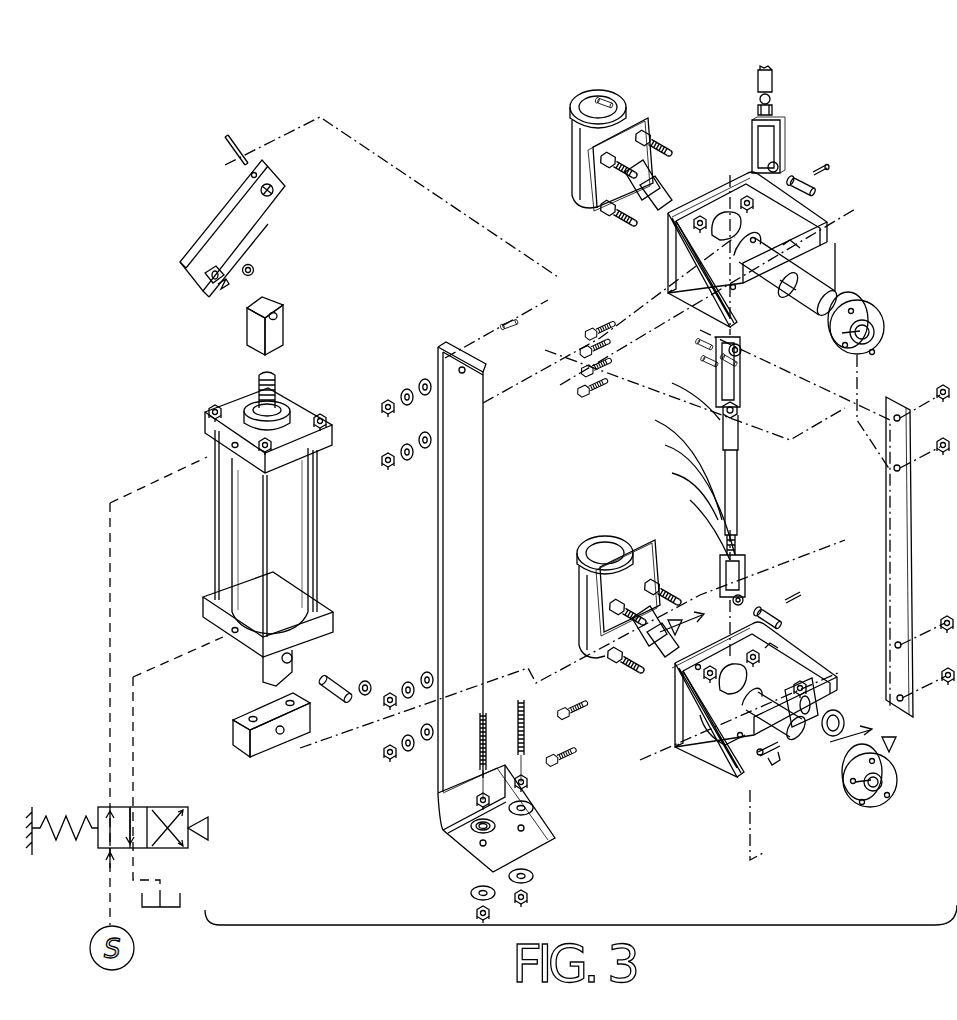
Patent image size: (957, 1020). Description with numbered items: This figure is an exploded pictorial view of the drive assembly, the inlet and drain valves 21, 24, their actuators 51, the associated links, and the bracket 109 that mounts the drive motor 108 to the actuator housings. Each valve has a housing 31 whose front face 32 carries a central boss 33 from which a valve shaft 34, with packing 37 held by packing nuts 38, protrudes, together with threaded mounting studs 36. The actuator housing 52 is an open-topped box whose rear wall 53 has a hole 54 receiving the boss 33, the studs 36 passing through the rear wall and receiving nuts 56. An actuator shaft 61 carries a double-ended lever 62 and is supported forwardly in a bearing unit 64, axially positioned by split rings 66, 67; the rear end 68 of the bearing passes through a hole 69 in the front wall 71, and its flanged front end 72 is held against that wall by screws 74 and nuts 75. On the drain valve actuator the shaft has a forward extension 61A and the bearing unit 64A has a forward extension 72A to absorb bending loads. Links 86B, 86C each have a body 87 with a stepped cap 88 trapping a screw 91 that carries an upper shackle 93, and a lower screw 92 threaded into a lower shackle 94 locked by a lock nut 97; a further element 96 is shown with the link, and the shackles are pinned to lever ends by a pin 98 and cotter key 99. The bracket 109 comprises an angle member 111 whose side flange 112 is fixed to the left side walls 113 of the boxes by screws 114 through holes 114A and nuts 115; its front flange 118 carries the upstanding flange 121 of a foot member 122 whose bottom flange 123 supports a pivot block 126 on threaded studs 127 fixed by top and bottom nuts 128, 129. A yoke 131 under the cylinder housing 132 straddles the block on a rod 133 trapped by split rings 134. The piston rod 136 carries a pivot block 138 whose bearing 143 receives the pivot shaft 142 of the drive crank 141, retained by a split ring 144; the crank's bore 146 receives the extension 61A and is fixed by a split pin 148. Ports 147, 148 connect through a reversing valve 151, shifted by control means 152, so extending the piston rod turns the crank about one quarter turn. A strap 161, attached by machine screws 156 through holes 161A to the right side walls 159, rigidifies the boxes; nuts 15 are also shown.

The nuts 15 is at (943, 383).
The inlet valve 21 is at (605, 600).
The drain valve 24 is at (552, 158).
The valve housing 31 is at (580, 610).
The front face 32 is at (640, 567).
The central boss 33 is at (605, 612).
The valve shaft 34 is at (660, 612).
The threaded mounting studs 36 is at (672, 575).
The packing 37 is at (597, 655).
The packing nuts 38 is at (640, 660).
The actuator 51 is at (648, 256).
The housing 52 is at (668, 262).
The rear wall 53 is at (722, 575).
The hole 54 is at (720, 715).
The nuts 56 is at (782, 626).
The actuator shaft 61 is at (788, 240).
The forward extension 61A is at (812, 278).
The lever 62 is at (725, 290).
The bearing unit 64 is at (850, 828).
The bearing unit 64A is at (888, 302).
The split ring 66 is at (780, 690).
The split ring 67 is at (822, 700).
The rear end 68 is at (858, 735).
The hole 69 is at (817, 694).
The front wall 71 is at (840, 262).
The front end 72 is at (885, 758).
The forward extension 72A is at (878, 318).
The screws 74 is at (876, 840).
The nuts 75 is at (766, 768).
The middle link 86B is at (785, 99).
The bottom link 86C is at (748, 510).
The body 87 is at (740, 475).
The stepped cap 88 is at (740, 440).
The screw 91 is at (718, 409).
The screw 92 is at (684, 491).
The shackle 93 is at (716, 378).
The shackle 94 is at (697, 523).
The wire 96 is at (680, 445).
The lock nut 97 is at (671, 462).
The pin 98 is at (765, 600).
The cotter key 99 is at (800, 594).
The drive motor 108 is at (279, 524).
The bracket 109 is at (499, 591).
The angle member 111 is at (482, 514).
The side flange 112 is at (445, 345).
The left side wall 113 is at (675, 290).
The screws 114 is at (790, 350).
The machine screw holes 114A is at (448, 362).
The nuts 115 is at (385, 400).
The front flange 118 is at (466, 549).
The upstanding flange 121 is at (455, 822).
The foot member 122 is at (499, 831).
The bottom flange 123 is at (548, 838).
The pivot block 126 is at (240, 712).
The threaded studs 127 is at (527, 745).
The top nuts 128 is at (530, 788).
The bottom nuts 129 is at (530, 898).
The yoke 131 is at (295, 660).
The cylinder housing 132 is at (295, 570).
The rod 133 is at (330, 680).
The split rings 134 is at (370, 682).
The piston rod 136 is at (278, 388).
The pivot block 138 is at (277, 338).
The drive crank 141 is at (212, 215).
The pivot shaft 142 is at (205, 280).
The bearing 143 is at (278, 314).
The split ring 144 is at (243, 268).
The bore 146 is at (273, 190).
The extend port 147 is at (230, 630).
The split pin 148 is at (223, 137).
The reversing valve 151 is at (103, 855).
The control means 152 is at (210, 828).
The machine screws 156 is at (820, 200).
The right side wall 159 is at (815, 215).
The strap 161 is at (900, 538).
The machine screw holes 161A is at (900, 435).